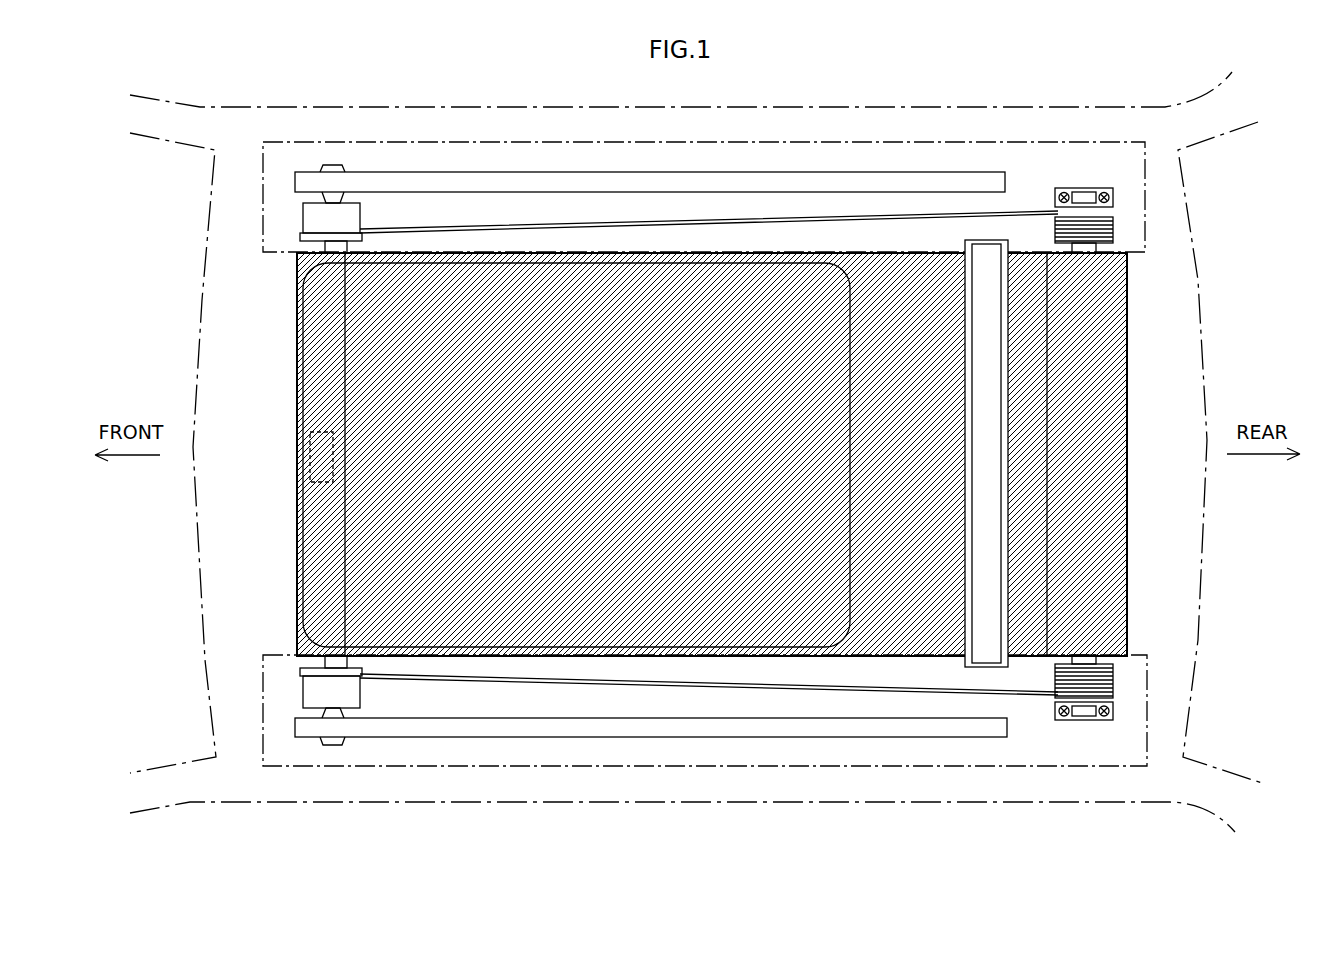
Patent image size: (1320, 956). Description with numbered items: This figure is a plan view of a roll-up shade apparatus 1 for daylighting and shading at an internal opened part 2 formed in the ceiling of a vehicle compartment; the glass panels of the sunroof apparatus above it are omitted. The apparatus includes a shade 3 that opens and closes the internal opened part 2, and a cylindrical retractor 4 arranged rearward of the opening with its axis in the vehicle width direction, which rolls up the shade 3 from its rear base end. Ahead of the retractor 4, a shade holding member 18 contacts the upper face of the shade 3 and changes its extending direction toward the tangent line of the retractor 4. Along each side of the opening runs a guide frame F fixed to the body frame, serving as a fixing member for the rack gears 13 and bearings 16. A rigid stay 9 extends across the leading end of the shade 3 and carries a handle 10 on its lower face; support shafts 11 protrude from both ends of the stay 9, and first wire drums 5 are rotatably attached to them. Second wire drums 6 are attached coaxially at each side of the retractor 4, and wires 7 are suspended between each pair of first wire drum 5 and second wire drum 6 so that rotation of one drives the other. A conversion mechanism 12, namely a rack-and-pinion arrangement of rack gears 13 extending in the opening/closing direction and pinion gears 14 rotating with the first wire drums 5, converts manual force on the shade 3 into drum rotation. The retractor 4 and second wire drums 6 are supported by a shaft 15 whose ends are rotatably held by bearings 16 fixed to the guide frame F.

The roll-up shade apparatus 1 is at (258, 353).
The internal opened part 2 is at (472, 250).
The shade 3 is at (673, 290).
The retractor 4 is at (1128, 377).
The first wire drum 5 is at (315, 218).
The second wire drum 6 is at (1112, 217).
The wire 7 is at (758, 220).
The stay 9 is at (297, 637).
The handle 10 is at (297, 452).
The support shaft 11 is at (300, 241).
The conversion mechanism 12 is at (312, 80).
The rack gear 13 is at (408, 172).
The pinion gear 14 is at (345, 166).
The shaft 15 is at (1112, 661).
The bearing 16 is at (1083, 188).
The shade holding member 18 is at (990, 240).
The guide frame F is at (566, 128).